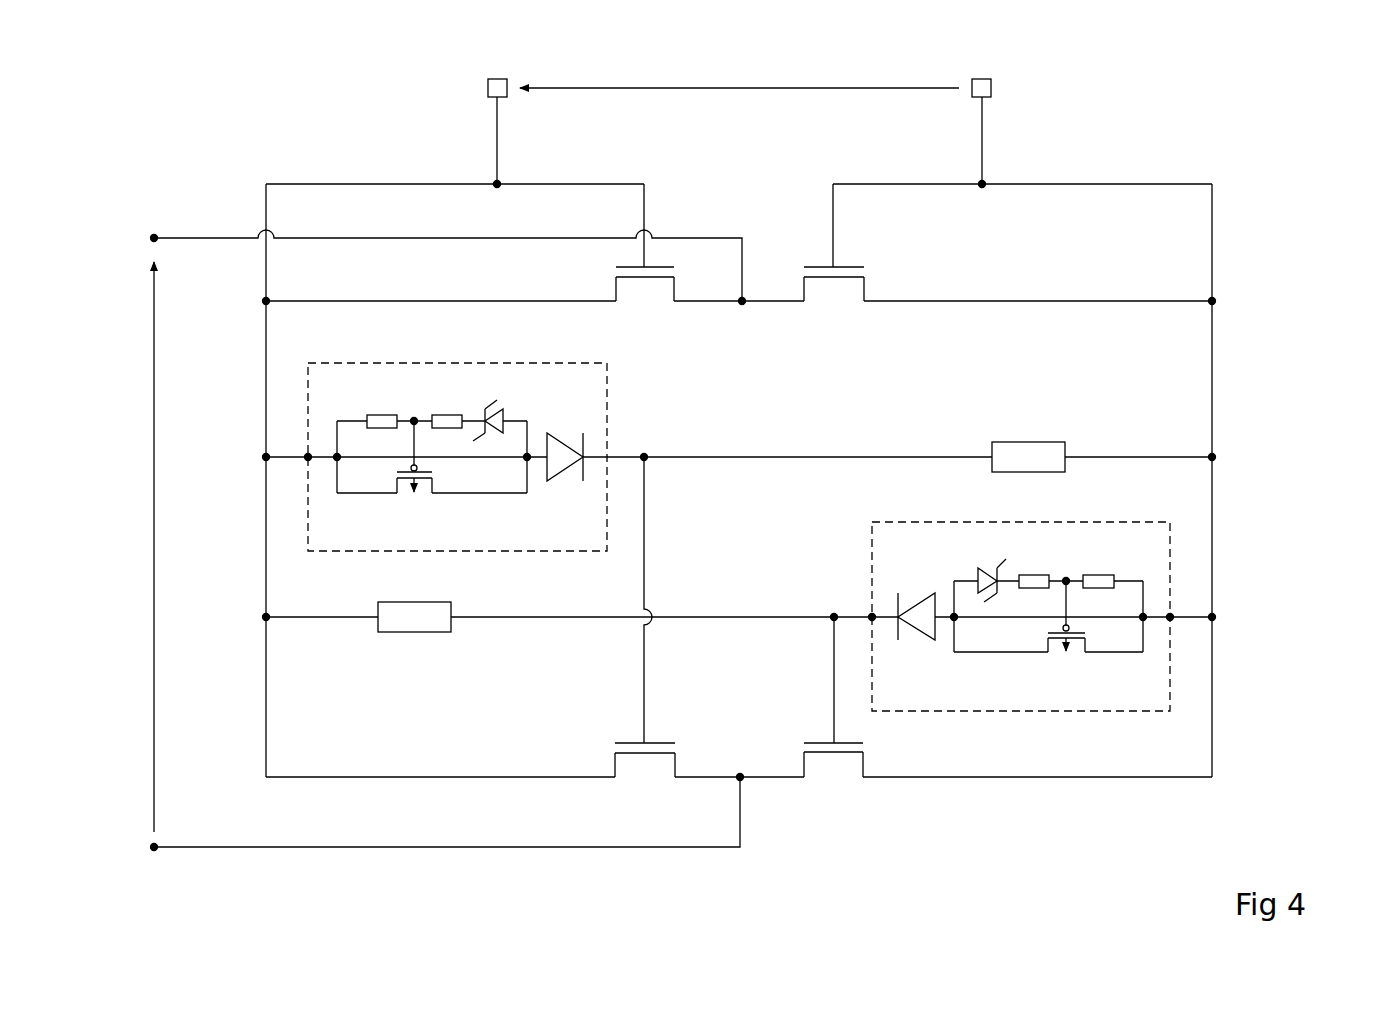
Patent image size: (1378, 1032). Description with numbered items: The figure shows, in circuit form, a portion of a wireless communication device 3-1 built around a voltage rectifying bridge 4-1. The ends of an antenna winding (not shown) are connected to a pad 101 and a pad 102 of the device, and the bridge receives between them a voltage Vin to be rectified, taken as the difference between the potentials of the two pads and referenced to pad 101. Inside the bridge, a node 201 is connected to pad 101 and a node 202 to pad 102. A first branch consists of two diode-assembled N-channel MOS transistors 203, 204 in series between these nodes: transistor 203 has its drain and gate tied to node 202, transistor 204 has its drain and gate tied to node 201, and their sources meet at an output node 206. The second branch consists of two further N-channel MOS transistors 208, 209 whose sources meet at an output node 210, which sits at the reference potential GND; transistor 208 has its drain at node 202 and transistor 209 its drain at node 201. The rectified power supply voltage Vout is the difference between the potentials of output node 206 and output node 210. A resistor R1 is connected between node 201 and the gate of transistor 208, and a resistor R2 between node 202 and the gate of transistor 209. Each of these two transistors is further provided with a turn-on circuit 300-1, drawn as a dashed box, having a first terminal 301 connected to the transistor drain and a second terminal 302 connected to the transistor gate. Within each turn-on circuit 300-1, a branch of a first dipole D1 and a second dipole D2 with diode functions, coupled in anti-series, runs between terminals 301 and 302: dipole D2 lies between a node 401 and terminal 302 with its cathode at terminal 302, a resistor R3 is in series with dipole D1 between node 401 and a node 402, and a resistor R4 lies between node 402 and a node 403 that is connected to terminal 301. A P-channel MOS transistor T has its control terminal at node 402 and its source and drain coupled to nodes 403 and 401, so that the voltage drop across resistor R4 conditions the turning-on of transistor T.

The device 3-1 is at (1194, 78).
The rectifying bridge 4-1 is at (1241, 360).
The pad 101 is at (983, 78).
The pad 102 is at (495, 79).
The node 201 is at (985, 183).
The node 202 is at (500, 183).
The N-channel MOS transistor 203 is at (650, 301).
The N-channel MOS transistor 204 is at (837, 301).
The output node 206 is at (156, 235).
The N-channel MOS transistor 208 is at (643, 779).
The N-channel MOS transistor 209 is at (836, 776).
The output node 210 is at (157, 851).
The turn-on circuit 300-1 is at (607, 383).
The first terminal 301 is at (307, 455).
The second terminal 302 is at (645, 455).
The node 401 is at (527, 460).
The node 402 is at (414, 419).
The node 403 is at (336, 455).
The resistor R1 is at (1030, 442).
The resistor R2 is at (412, 633).
The resistor R3 is at (740, 490).
The resistor R4 is at (740, 490).
The first dipole with a diode function D1 is at (496, 400).
The second dipole with a diode function D2 is at (567, 477).
The transistor T is at (441, 480).
The voltage Vin is at (744, 88).
The rectified power supply voltage Vout is at (153, 408).
The reference potential GND is at (114, 848).